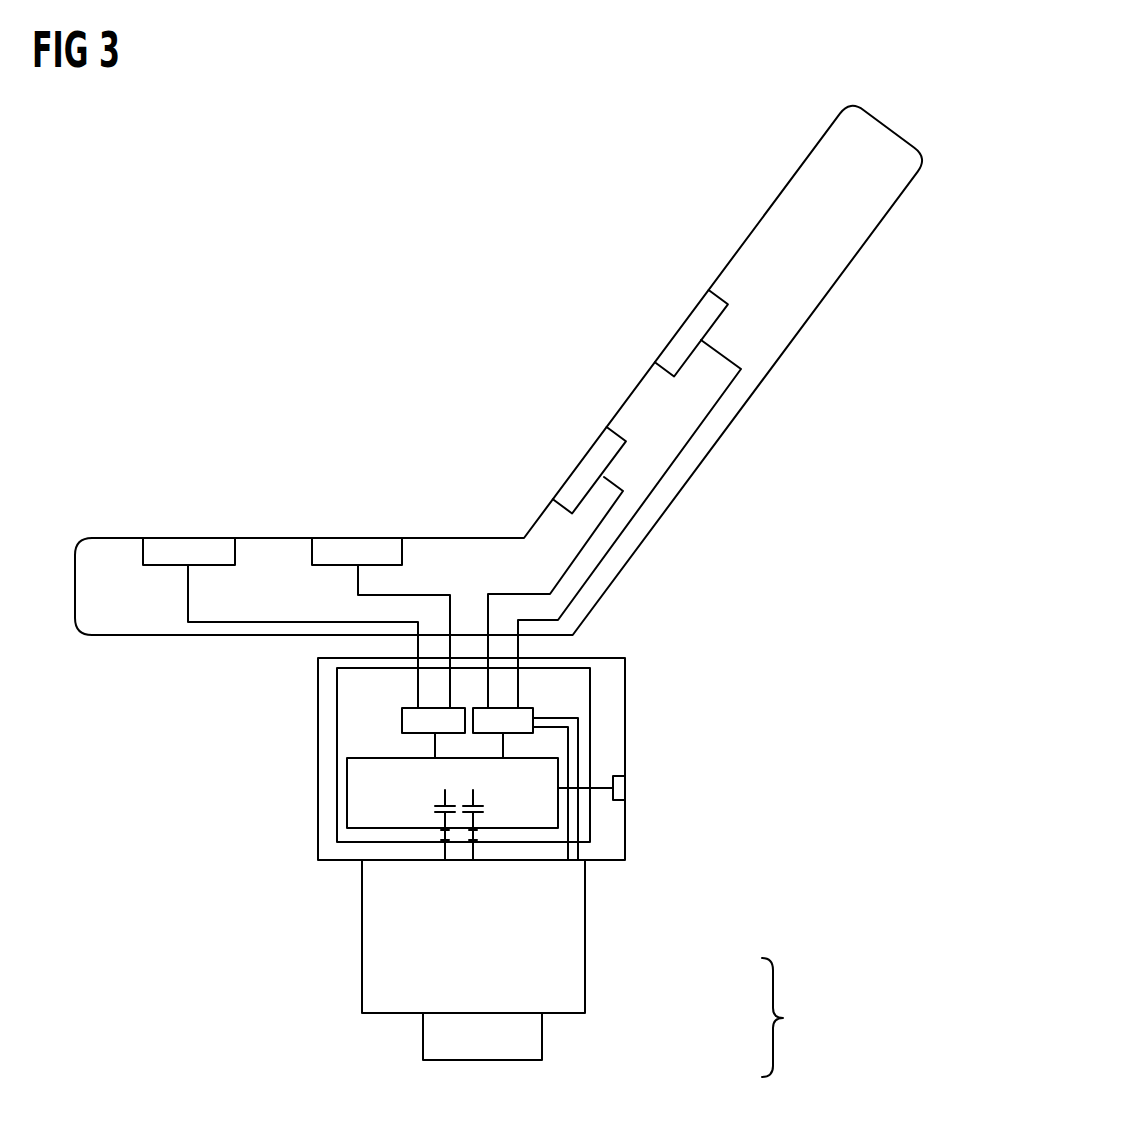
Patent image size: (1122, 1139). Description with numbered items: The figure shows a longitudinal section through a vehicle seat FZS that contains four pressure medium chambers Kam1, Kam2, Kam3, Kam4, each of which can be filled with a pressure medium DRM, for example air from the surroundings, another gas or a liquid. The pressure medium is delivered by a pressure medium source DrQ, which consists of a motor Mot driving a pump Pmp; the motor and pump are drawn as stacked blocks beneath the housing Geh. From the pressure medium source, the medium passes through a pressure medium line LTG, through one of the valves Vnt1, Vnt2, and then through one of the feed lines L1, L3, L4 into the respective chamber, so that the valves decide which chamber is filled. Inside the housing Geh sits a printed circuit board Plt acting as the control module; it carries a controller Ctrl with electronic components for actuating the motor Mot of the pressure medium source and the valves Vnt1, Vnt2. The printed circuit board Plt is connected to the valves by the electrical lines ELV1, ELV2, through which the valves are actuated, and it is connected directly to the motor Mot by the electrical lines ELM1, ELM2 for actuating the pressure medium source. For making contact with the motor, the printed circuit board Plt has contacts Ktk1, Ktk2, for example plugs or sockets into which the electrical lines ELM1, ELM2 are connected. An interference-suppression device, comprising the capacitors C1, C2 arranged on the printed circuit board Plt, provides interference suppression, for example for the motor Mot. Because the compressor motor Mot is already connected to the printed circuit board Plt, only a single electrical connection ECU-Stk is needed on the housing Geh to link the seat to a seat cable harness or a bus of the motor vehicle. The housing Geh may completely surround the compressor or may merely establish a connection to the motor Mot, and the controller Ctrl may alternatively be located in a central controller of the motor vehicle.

The vehicle seat FZS is at (827, 252).
The pressure medium chamber Kam1 is at (578, 477).
The pressure medium chamber Kam2 is at (678, 342).
The pressure medium chamber Kam3 is at (175, 548).
The pressure medium chamber Kam4 is at (365, 548).
The feed line L1 is at (272, 620).
The feed line L3 is at (607, 520).
The feed line L4 is at (697, 433).
The housing Geh is at (625, 842).
The printed circuit board Plt is at (590, 685).
The pressure medium DRM is at (393, 718).
The valve Vnt1 is at (423, 722).
The valve Vnt2 is at (527, 712).
The electrical line ELV1 is at (432, 747).
The electrical line ELV2 is at (503, 747).
The pressure medium line LTG is at (573, 820).
The controller Ctrl is at (347, 797).
The electrical connection ECU-Stk is at (625, 787).
The interference-suppression capacitor C1 is at (440, 803).
The interference-suppression capacitor C2 is at (480, 800).
The contact Ktk1 is at (440, 833).
The contact Ktk2 is at (478, 838).
The electrical line ELM1 is at (480, 855).
The electrical line ELM2 is at (445, 852).
The motor Mot is at (572, 983).
The pump Pmp is at (530, 1042).
The pressure medium source DrQ is at (799, 1017).